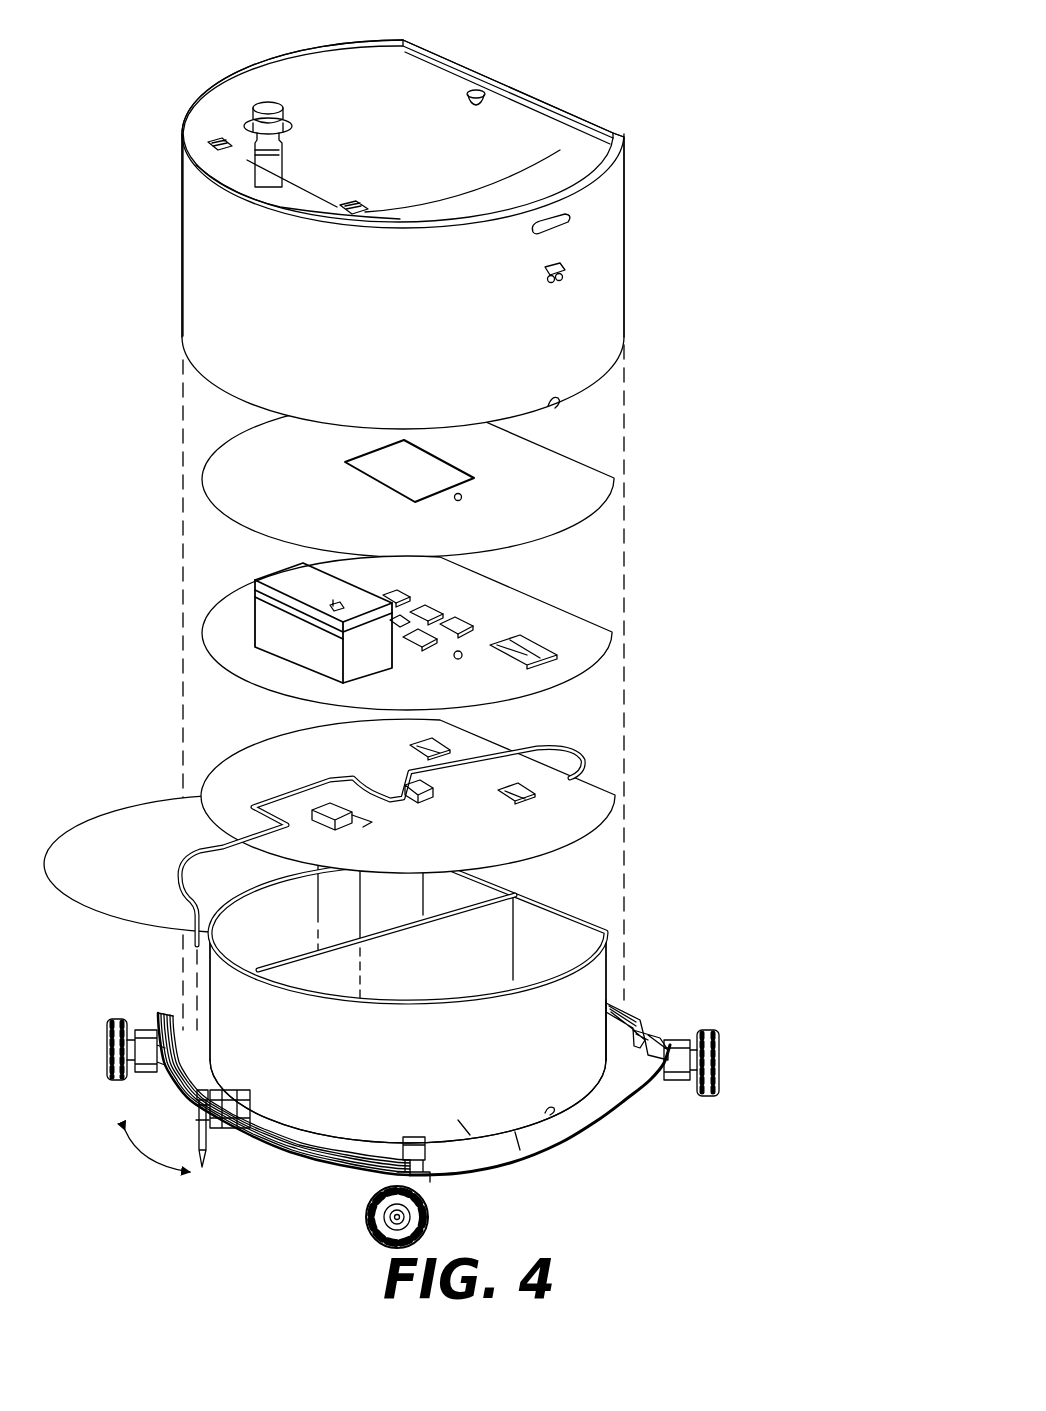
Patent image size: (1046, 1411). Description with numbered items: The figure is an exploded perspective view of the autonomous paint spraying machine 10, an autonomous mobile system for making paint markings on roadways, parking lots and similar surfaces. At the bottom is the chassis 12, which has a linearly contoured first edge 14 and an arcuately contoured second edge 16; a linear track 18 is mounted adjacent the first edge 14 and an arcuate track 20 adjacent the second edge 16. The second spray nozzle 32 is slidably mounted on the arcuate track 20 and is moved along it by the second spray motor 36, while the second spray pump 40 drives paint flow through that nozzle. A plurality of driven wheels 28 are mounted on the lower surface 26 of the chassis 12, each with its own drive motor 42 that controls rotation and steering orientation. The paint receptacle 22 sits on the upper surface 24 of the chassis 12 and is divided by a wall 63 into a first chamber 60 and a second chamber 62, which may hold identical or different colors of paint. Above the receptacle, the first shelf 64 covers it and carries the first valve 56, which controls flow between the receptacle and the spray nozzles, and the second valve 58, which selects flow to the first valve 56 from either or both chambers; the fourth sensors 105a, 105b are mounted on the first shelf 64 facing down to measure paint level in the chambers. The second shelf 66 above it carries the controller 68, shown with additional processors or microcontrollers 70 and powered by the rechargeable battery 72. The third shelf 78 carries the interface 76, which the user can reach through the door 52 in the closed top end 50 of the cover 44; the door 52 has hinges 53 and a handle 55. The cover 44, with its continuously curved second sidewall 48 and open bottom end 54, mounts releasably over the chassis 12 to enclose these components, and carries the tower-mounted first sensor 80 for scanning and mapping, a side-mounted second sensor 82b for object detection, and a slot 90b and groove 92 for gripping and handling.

The autonomous paint spraying machine 10 is at (797, 95).
The chassis 12 is at (520, 1143).
The first edge 14 is at (674, 1040).
The second edge 16 is at (428, 1175).
The linear track 18 is at (626, 1018).
The arcuate track 20 is at (300, 1152).
The paint receptacle 22 is at (466, 1132).
The upper surface 24 is at (630, 1115).
The lower surface 26 is at (520, 1152).
The driven wheels 28 is at (112, 1020).
The second spray nozzle 32 is at (195, 1130).
The second spray motor 36 is at (265, 1140).
The second spray pump 40 is at (210, 1100).
The drive motor 42 is at (143, 1030).
The cover 44 is at (420, 234).
The second sidewall 48 is at (198, 217).
The top end 50 is at (235, 152).
The door 52 is at (585, 118).
The hinges 53 is at (215, 138).
The open bottom end 54 is at (340, 206).
The handle 55 is at (485, 92).
The first valve 56 is at (430, 800).
The second valve 58 is at (300, 815).
The first chamber 60 is at (383, 969).
The second chamber 62 is at (478, 882).
The wall 63 is at (485, 935).
The first shelf 64 is at (598, 803).
The second shelf 66 is at (588, 655).
The controller 68 is at (530, 650).
The additional processors or microcontrollers 70 is at (470, 620).
The rechargeable battery 72 is at (260, 625).
The interface 76 is at (455, 468).
The third shelf 78 is at (590, 492).
The first sensor 80 is at (267, 102).
The second sensor 82b is at (565, 272).
The slot 90b is at (575, 215).
The groove 92 is at (565, 385).
The fourth sensor 105a is at (530, 795).
The fourth sensor 105b is at (440, 748).